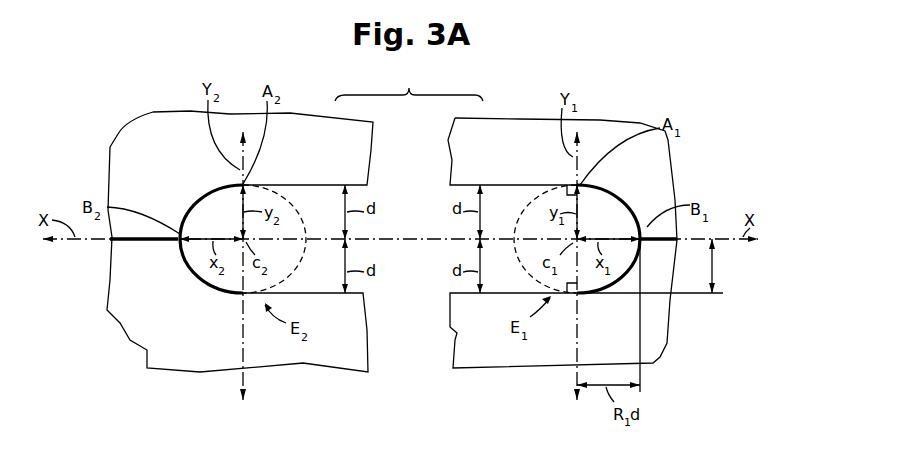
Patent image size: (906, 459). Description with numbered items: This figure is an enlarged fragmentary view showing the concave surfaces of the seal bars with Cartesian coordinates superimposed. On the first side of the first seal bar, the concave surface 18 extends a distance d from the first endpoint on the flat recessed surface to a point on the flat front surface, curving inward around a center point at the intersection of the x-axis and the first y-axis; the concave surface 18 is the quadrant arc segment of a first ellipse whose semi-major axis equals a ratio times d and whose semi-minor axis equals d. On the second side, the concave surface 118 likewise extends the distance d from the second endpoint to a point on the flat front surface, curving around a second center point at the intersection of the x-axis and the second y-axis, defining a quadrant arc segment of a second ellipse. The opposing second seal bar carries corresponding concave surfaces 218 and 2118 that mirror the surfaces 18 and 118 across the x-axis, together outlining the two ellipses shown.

The concave surface 118 is at (198, 197).
The lower contact surface portion of second busbar 2118 is at (200, 280).
The concave surface 18 is at (623, 198).
The lower contact surface portion of first busbar 218 is at (625, 275).